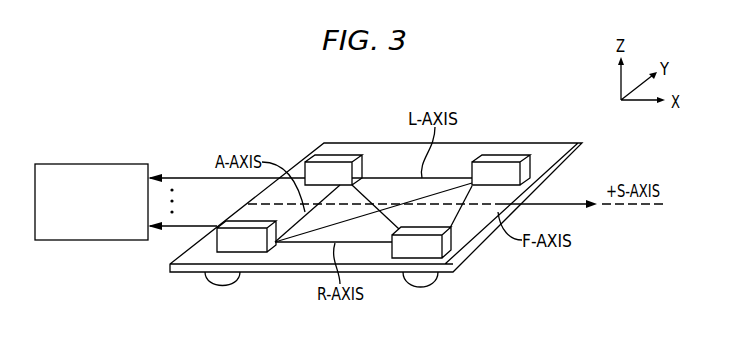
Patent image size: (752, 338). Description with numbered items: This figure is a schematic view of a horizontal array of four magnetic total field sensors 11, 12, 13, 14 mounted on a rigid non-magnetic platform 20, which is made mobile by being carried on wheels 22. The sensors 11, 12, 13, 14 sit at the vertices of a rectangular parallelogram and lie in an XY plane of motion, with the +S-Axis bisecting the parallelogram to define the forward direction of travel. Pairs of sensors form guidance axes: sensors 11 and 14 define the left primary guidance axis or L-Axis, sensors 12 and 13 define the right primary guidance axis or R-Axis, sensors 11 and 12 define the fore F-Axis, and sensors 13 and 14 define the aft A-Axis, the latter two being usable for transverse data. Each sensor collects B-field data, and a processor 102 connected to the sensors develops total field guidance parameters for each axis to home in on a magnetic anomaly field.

The processor 102 is at (88, 163).
The total field sensor 11 is at (500, 155).
The total field sensor 12 is at (449, 252).
The total field sensor 13 is at (232, 225).
The total field sensor 14 is at (318, 155).
The platform 20 is at (178, 274).
The wheels 22 is at (215, 287).